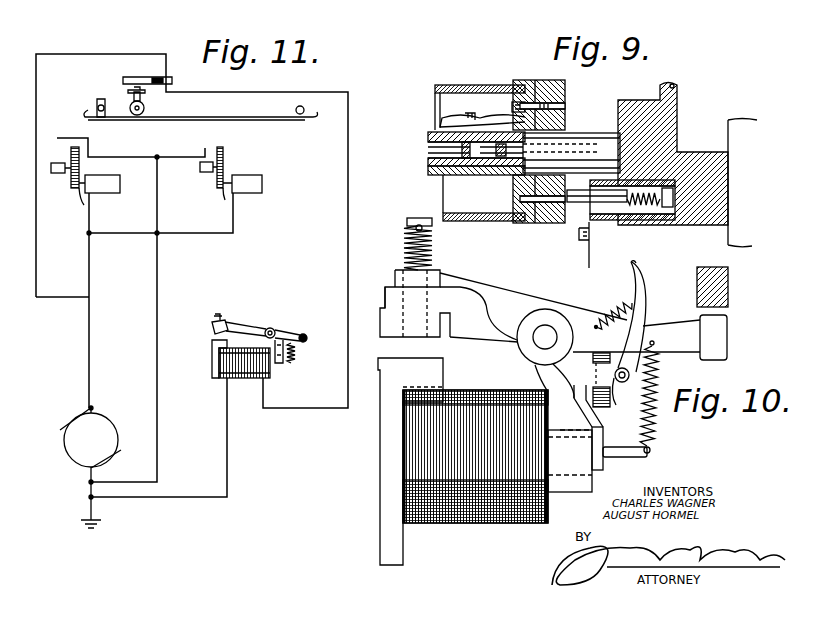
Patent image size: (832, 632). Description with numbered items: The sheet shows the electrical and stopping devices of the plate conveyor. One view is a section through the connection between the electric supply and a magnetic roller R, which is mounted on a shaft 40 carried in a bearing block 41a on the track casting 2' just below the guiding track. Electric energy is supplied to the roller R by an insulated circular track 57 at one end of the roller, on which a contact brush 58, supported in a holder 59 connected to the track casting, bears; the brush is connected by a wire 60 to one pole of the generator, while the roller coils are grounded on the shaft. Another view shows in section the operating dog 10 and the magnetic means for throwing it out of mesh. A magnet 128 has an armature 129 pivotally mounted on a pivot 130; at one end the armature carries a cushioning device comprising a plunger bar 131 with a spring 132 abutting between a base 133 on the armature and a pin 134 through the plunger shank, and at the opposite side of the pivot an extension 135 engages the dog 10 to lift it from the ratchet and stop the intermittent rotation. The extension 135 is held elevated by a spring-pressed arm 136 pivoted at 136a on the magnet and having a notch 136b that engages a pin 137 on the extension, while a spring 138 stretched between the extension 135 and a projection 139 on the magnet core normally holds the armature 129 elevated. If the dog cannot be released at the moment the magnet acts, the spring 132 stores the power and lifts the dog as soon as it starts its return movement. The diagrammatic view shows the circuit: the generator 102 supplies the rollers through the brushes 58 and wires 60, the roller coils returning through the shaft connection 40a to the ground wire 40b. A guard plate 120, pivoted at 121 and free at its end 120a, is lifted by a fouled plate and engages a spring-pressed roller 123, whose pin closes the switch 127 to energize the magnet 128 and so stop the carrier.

In FIG. 9, the casting 2' is at (742, 183).
In FIG. 10, the dog or pawl 10 is at (703, 267).
In FIG. 11, the shaft 40 is at (58, 174).
In FIG. 9, the shaft 40 is at (605, 121).
In FIG. 11, the line 40a is at (121, 156).
In FIG. 11, the ground wire 40b is at (158, 283).
In FIG. 9, the bearing block 41a is at (698, 158).
In FIG. 11, the insulated circular track 57 is at (79, 168).
In FIG. 9, the insulated circular track 57 is at (565, 98).
In FIG. 11, the contact brush 58 is at (82, 188).
In FIG. 9, the contact brush 58 is at (577, 205).
In FIG. 9, the holder 59 is at (612, 177).
In FIG. 11, the wire 60 is at (91, 212).
In FIG. 9, the wire 60 is at (584, 251).
In FIG. 11, the generator 102 is at (70, 455).
In FIG. 11, the guard plate 120 is at (252, 117).
In FIG. 11, the free end of guard plate 120a is at (90, 112).
In FIG. 11, the pivot 121 is at (300, 116).
In FIG. 11, the spring-pressed roller 123 is at (145, 110).
In FIG. 11, the switch 127 is at (123, 78).
In FIG. 11, the magnet 128 is at (245, 384).
In FIG. 10, the magnet 128 is at (420, 423).
In FIG. 11, the armature 129 is at (215, 330).
In FIG. 10, the armature 129 is at (445, 338).
In FIG. 10, the pivot 130 is at (545, 337).
In FIG. 10, the plunger bar 131 is at (407, 222).
In FIG. 10, the spring 132 is at (403, 237).
In FIG. 10, the base 133 is at (397, 271).
In FIG. 10, the pin 134 is at (422, 229).
In FIG. 11, the extension 135 is at (293, 335).
In FIG. 10, the extension 135 is at (685, 343).
In FIG. 10, the spring-pressed arm 136 is at (642, 307).
In FIG. 10, the pivot of arm 136a is at (624, 383).
In FIG. 10, the notch 136b is at (625, 303).
In FIG. 10, the projection or pin 137 is at (583, 373).
In FIG. 10, the spring 138 is at (652, 423).
In FIG. 10, the projection 139 is at (652, 452).
In FIG. 9, the magnetic roller R is at (458, 70).